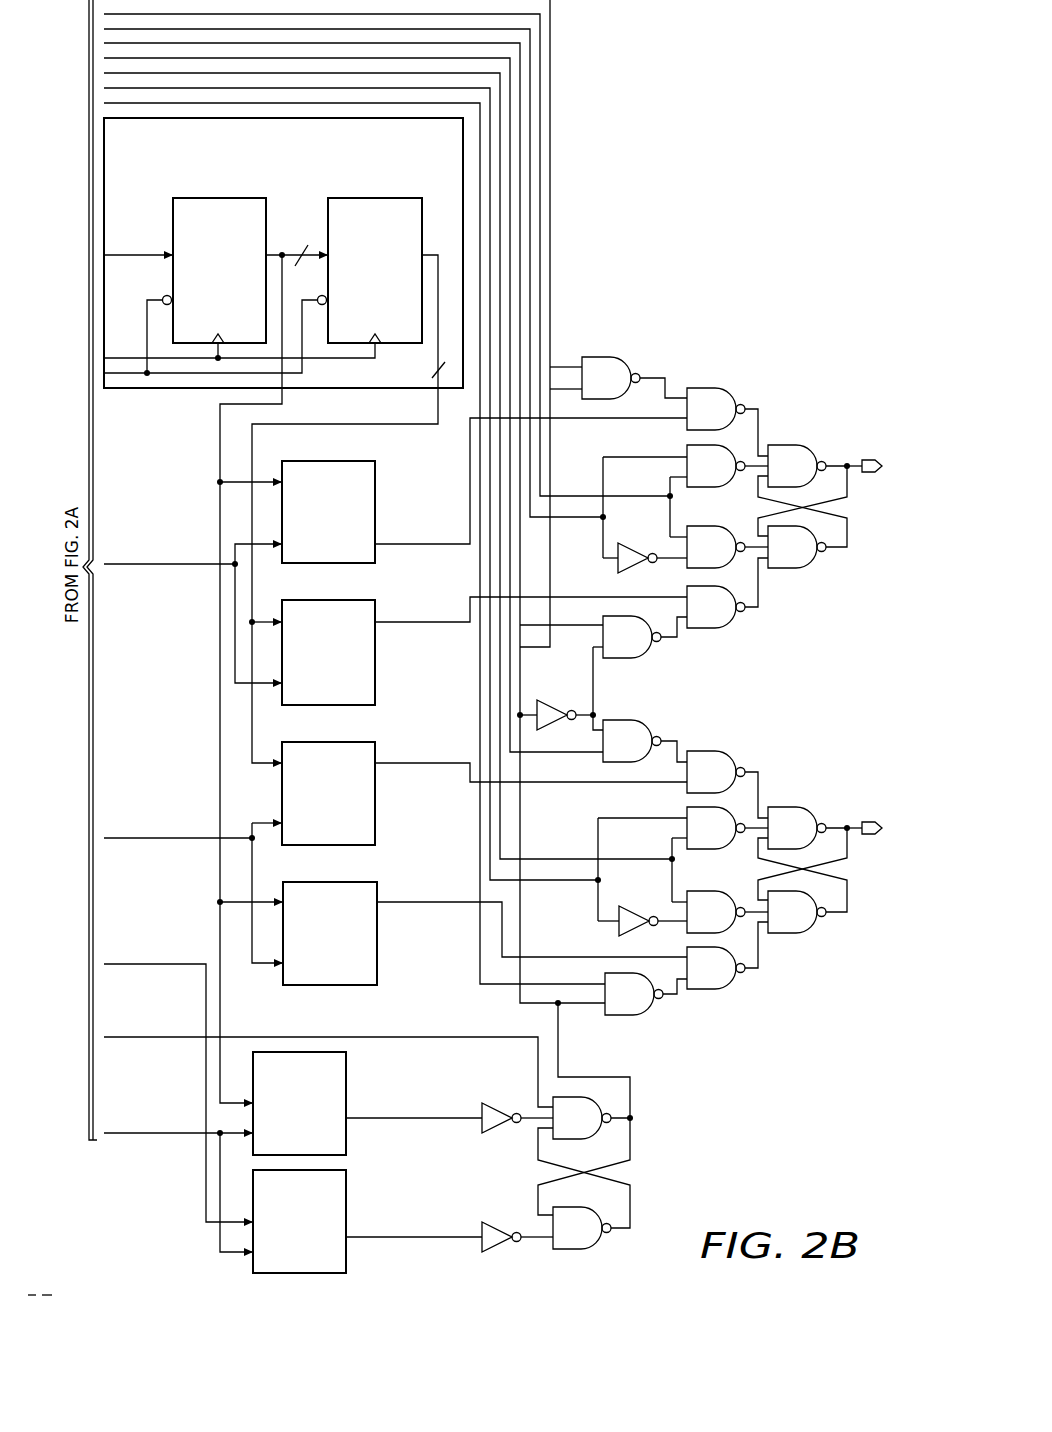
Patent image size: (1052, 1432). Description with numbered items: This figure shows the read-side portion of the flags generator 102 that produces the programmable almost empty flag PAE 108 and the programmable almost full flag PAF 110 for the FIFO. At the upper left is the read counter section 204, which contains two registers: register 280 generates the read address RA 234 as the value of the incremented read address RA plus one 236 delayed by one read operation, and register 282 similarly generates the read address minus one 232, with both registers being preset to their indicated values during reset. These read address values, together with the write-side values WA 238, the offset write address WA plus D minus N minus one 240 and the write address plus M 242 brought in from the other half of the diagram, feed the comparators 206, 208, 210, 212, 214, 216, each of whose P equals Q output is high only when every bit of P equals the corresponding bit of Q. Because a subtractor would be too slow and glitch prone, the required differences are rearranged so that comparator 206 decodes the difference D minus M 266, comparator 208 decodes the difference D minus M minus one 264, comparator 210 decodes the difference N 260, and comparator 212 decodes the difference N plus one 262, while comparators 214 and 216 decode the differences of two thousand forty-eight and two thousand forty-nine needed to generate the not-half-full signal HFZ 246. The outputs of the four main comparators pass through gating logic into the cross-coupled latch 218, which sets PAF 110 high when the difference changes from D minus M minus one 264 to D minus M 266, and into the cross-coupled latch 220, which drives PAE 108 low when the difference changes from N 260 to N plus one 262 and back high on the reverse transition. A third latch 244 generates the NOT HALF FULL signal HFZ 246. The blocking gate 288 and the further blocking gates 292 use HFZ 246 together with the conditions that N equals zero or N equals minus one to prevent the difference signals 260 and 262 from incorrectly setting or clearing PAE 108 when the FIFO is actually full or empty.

The flags generator 102 is at (724, 96).
The read counter section 204 is at (283, 282).
The comparator U16 206 is at (376, 516).
The comparator U17 208 is at (376, 690).
The comparator U18 210 is at (376, 810).
The comparator U19 212 is at (378, 952).
The comparator U20 214 is at (347, 1134).
The comparator U21 216 is at (347, 1254).
The cross-coupled latch 218 is at (730, 360).
The cross-coupled latch 220 is at (762, 728).
The RA-1 value 232 is at (408, 430).
The RA value 234 is at (218, 505).
The RA+1 value 236 is at (172, 974).
The WA value 238 is at (172, 1143).
The WA+D-N-1 value 240 is at (168, 848).
The WA+M value 242 is at (180, 572).
The third latch 244 is at (667, 1165).
The HFZ signal 246 is at (632, 1094).
The WA-RA=N signal 260 is at (548, 783).
The WA-RA=N+1 signal 262 is at (570, 956).
The WA-RA=D-M-1 signal 264 is at (578, 596).
The WA-RA=D-M signal 266 is at (565, 421).
The register U7 280 is at (187, 196).
The register U8 282 is at (406, 196).
The gate U36 288 is at (625, 718).
The gate U38 / gate U37 292 is at (708, 750).
The PAE signal 108 is at (900, 842).
The PAF signal 110 is at (898, 448).